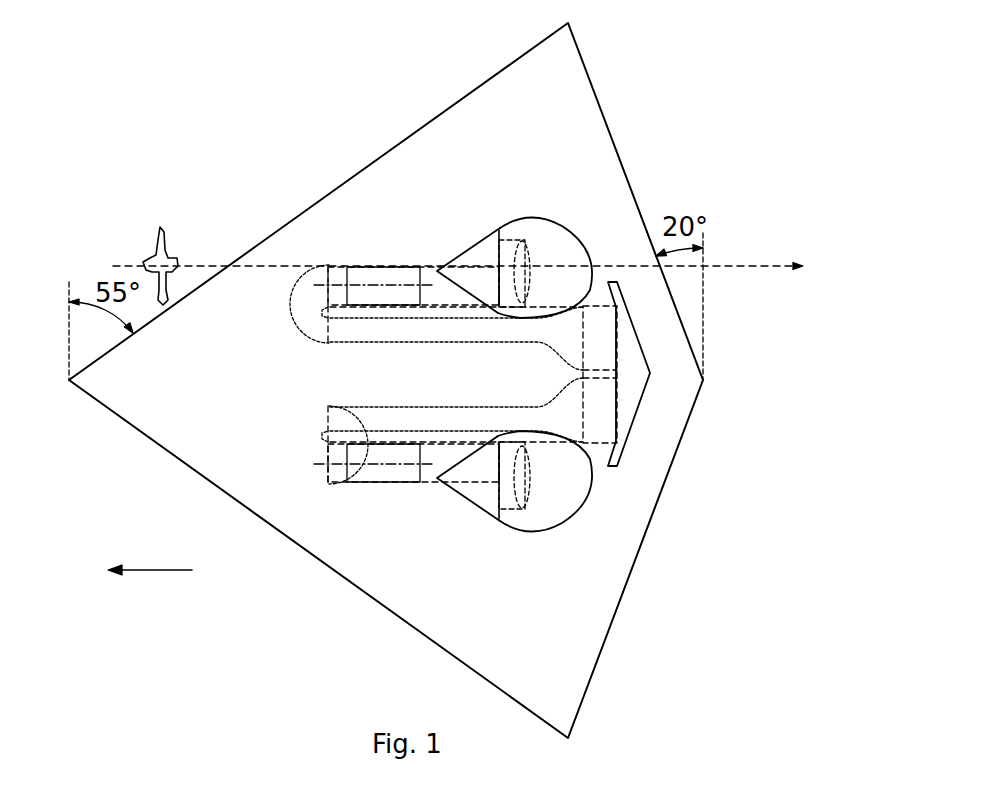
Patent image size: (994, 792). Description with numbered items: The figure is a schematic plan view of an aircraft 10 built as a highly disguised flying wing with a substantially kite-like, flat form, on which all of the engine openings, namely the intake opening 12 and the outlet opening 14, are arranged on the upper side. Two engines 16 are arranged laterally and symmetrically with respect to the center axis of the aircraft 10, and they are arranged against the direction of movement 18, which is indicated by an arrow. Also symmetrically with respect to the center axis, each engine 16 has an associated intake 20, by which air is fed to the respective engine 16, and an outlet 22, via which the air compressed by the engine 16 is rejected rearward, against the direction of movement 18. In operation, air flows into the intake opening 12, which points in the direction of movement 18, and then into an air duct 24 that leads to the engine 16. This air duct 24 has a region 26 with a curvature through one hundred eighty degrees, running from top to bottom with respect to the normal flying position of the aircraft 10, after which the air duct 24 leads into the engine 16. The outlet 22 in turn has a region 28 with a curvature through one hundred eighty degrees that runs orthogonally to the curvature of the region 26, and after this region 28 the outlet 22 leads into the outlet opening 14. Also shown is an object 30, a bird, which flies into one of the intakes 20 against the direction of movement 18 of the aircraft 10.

The aircraft 10 is at (690, 75).
The intake opening 12 is at (490, 258).
The outlet opening 14 is at (607, 343).
The engine 16 is at (382, 277).
The direction of movement 18 is at (162, 573).
The intake 20 is at (516, 195).
The outlet 22 is at (272, 329).
The air duct 24 is at (460, 275).
The curved region of the air duct 26 is at (525, 262).
The curved region of the outlet 28 is at (312, 293).
The object (bird) 30 is at (173, 240).